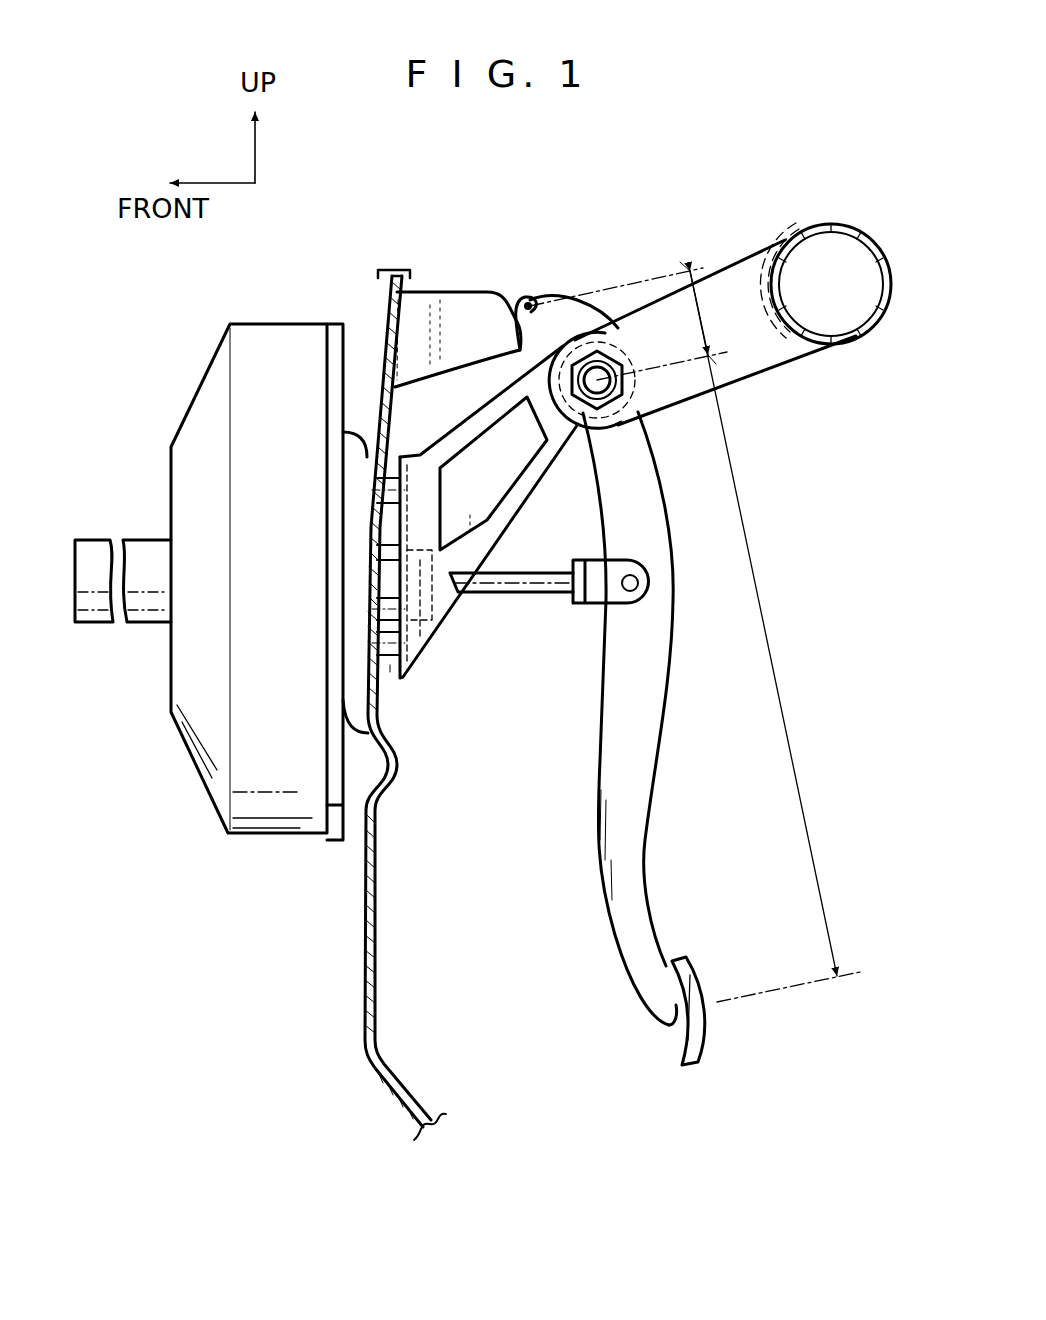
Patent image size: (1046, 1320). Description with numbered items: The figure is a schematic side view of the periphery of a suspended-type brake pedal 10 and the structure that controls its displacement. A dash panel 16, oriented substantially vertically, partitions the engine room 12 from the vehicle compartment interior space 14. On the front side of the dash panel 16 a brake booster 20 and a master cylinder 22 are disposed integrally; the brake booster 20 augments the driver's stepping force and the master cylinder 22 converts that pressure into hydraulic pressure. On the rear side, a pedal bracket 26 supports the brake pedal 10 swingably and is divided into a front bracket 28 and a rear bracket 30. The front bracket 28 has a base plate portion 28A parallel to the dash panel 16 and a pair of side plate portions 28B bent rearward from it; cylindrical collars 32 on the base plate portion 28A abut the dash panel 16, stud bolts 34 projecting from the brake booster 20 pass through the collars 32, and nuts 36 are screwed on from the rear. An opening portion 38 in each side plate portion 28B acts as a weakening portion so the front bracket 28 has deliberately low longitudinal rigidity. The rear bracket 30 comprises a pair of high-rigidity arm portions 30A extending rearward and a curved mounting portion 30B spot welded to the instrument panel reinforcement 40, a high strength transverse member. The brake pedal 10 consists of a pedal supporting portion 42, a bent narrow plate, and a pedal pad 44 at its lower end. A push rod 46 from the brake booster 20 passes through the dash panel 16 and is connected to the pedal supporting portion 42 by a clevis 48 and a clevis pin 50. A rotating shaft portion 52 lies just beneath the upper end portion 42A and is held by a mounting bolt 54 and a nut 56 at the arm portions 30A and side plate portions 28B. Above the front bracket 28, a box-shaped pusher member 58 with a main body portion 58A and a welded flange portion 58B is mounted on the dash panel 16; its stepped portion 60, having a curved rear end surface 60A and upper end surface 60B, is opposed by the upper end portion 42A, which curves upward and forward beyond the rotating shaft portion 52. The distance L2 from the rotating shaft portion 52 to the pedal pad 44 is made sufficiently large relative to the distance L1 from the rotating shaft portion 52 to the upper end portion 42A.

The brake pedal 10 is at (522, 1094).
The engine room 12 is at (278, 984).
The vehicle compartment interior space 14 is at (468, 984).
The dash panel 16 is at (398, 1083).
The brake booster 20 is at (192, 770).
The master cylinder 22 is at (98, 627).
The pedal bracket 26 is at (676, 421).
The front bracket 28 is at (489, 553).
The base plate portion 28A is at (410, 606).
The side plate portions 28B is at (456, 606).
The rear bracket 30 is at (721, 253).
The arm portions 30A is at (740, 262).
The mounting portion 30B is at (803, 237).
The cylindrical collars 32 is at (390, 672).
The stud bolts 34 is at (496, 480).
The nuts 36 is at (414, 470).
The opening portion 38 is at (498, 475).
The instrument panel reinforcement 40 is at (866, 342).
The pedal supporting portion 42 is at (622, 993).
The upper end portion 42A is at (578, 293).
The pedal pad 44 is at (684, 1045).
The push rod 46 is at (560, 597).
The clevis 48 is at (617, 568).
The clevis pin 50 is at (637, 580).
The rotating shaft portion 52 is at (591, 404).
The mounting bolt 54 is at (620, 410).
The nut 56 is at (632, 395).
The pusher member 58 is at (495, 197).
The main body portion 58A is at (443, 303).
The flange portion 58B is at (418, 285).
The stepped portion 60 is at (505, 197).
The rear end surface 60A is at (557, 310).
The upper end surface 60B is at (508, 300).
The distance L1 is at (708, 324).
The distance L2 is at (770, 622).